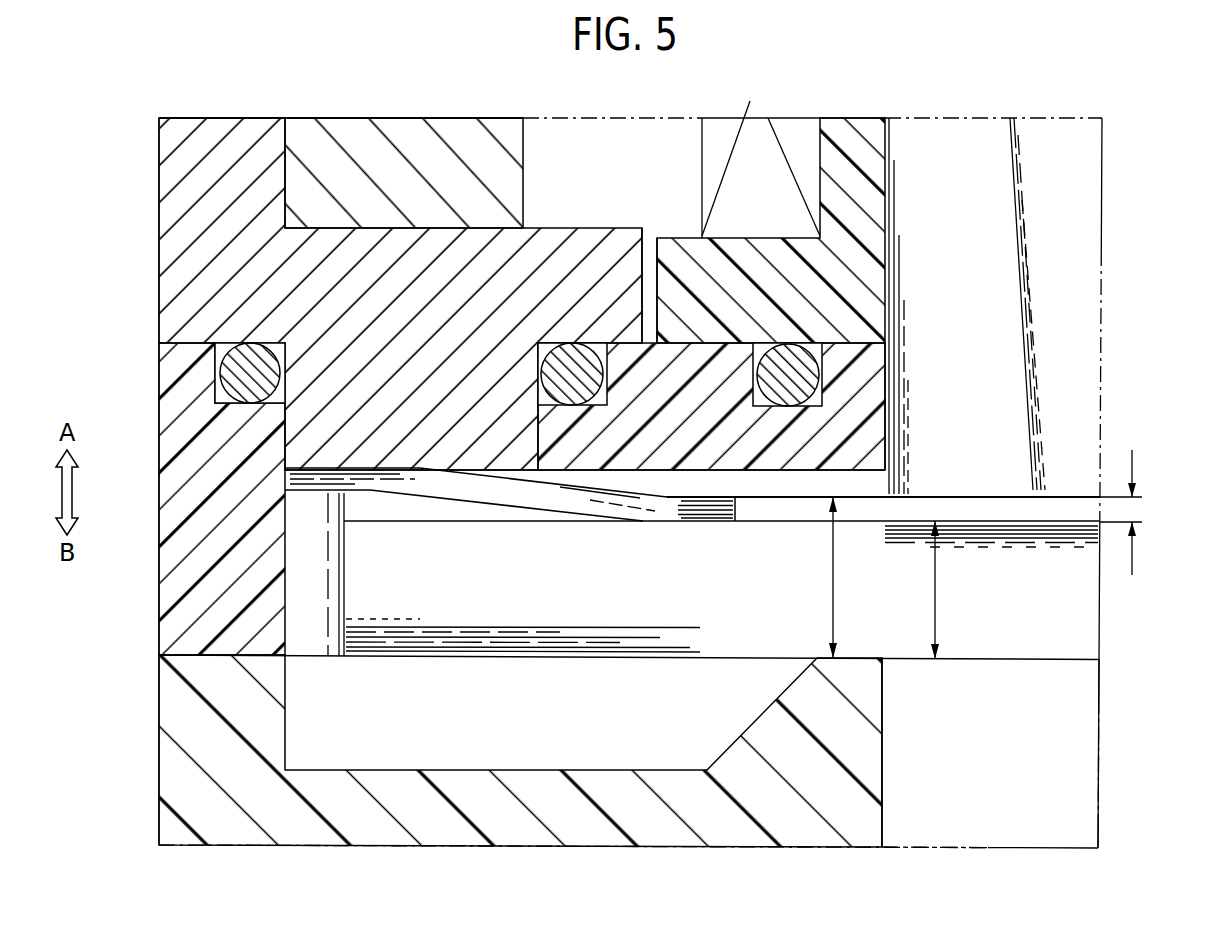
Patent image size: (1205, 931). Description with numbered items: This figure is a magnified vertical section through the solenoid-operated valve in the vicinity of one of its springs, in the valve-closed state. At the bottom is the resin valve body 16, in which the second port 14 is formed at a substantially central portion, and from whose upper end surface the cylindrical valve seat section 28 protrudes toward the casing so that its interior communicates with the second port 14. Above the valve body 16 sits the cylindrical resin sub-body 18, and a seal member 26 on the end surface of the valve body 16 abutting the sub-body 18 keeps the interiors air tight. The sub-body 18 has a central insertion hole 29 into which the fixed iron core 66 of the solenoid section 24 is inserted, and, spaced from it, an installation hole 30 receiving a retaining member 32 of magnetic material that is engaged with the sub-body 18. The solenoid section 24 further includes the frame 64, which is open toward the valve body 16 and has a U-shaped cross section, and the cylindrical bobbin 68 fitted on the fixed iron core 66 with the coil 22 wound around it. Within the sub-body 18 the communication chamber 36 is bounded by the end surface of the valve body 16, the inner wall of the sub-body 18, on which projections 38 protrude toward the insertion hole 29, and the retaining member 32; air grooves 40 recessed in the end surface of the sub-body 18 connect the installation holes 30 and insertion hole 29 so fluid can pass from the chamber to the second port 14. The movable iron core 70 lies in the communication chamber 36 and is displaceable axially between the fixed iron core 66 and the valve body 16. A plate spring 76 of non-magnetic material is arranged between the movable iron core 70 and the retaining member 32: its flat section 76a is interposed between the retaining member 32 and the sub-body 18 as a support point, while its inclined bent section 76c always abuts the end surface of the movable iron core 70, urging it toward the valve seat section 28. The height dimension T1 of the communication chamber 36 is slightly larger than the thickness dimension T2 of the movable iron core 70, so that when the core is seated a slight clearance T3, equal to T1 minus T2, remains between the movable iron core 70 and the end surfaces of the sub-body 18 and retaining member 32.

The second port 14 is at (985, 812).
The valve body 16 is at (168, 753).
The sub-body 18 is at (168, 596).
The coil 22 is at (763, 145).
The solenoid section 24 is at (353, 138).
The seal member 26 is at (230, 367).
The valve seat section 28 is at (862, 675).
The insertion hole 29 is at (885, 432).
The installation holes 30 is at (533, 445).
The retaining members 32 is at (178, 268).
The communication chamber 36 is at (1037, 505).
The projections 38 is at (316, 642).
The air grooves 40 is at (788, 485).
The frame 64 is at (470, 136).
The fixed iron core 66 is at (1085, 352).
The bobbin 68 is at (878, 210).
The movable iron core 70 is at (700, 648).
The springs 76 is at (606, 515).
The flat section 76a is at (383, 487).
The bent section 76c is at (689, 522).
The height dimension T1 is at (847, 577).
The thickness dimension T2 is at (949, 590).
The clearance T3 is at (1137, 512).